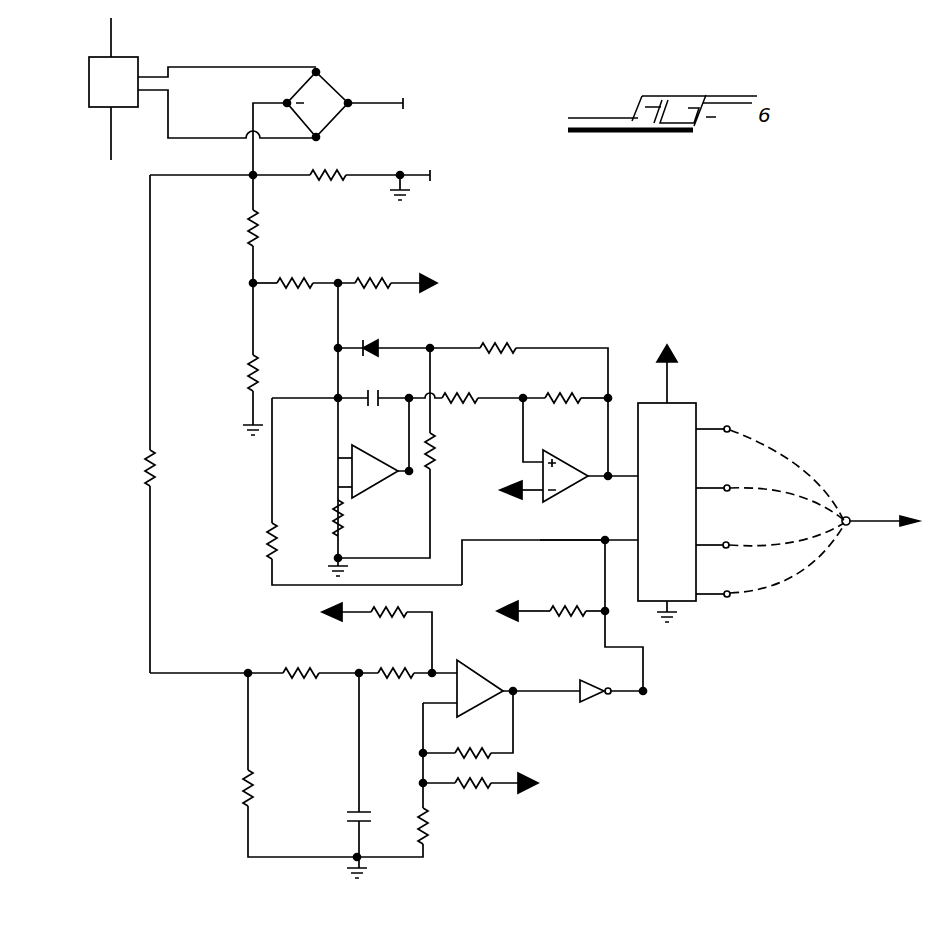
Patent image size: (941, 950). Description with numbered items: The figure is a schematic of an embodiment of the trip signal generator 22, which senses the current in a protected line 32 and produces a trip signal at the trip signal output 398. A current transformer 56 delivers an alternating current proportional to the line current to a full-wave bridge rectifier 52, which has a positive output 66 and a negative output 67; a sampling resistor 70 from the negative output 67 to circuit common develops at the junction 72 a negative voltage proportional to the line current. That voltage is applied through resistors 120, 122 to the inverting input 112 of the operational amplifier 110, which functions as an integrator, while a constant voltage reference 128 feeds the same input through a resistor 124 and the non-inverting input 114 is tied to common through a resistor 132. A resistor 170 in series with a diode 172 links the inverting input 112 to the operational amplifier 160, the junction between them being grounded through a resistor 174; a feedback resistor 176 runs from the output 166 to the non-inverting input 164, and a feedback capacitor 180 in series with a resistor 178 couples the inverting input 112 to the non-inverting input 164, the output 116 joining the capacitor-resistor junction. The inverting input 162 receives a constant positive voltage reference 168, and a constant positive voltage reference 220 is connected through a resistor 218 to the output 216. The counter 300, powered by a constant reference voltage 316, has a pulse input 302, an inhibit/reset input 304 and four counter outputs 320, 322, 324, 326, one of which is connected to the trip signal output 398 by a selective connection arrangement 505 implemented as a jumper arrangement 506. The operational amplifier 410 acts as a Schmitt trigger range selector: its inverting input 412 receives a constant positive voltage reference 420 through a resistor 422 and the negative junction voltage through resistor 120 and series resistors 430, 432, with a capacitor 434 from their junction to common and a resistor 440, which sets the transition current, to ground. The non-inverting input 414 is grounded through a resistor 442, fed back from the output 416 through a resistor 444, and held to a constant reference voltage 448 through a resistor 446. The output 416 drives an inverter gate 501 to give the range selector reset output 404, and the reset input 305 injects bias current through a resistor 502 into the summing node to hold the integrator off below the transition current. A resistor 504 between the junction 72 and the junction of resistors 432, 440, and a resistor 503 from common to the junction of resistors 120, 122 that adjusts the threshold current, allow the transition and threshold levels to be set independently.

The trip signal generator 22 is at (259, 874).
The line 32 is at (114, 44).
The full-wave bridge rectifier 52 is at (330, 90).
The current transformer 56 is at (86, 76).
The positive output 66 is at (369, 103).
The negative output 67 is at (254, 104).
The sampling resistor 70 is at (347, 174).
The junction 72 is at (250, 180).
The operational amplifier 110 is at (378, 482).
The inverting input 112 is at (336, 462).
The non-inverting input 114 is at (337, 489).
The output 116 is at (399, 466).
The resistor 120 is at (258, 240).
The resistor 122 is at (312, 276).
The resistor 124 is at (374, 278).
The constant voltage reference 128 is at (434, 284).
The resistor 132 is at (338, 526).
The operational amplifier 160 is at (560, 492).
The inverting input 162 is at (534, 492).
The non-inverting input 164 is at (522, 433).
The output 166 is at (590, 469).
The constant positive voltage reference 168 is at (498, 495).
The resistor 170 is at (489, 345).
The diode 172 is at (380, 346).
The resistor 174 is at (432, 450).
The feedback resistor 176 is at (554, 394).
The resistor 178 is at (472, 394).
The feedback capacitor 180 is at (376, 398).
The output 216 is at (578, 538).
The resistor 218 is at (580, 616).
The constant positive voltage reference 220 is at (519, 616).
The counter 300 is at (651, 476).
The pulse input 302 is at (604, 538).
The inhibit/reset input 304 is at (627, 549).
The reset input 305 is at (478, 539).
The constant reference voltage 316 is at (678, 353).
The counter output 320 is at (730, 600).
The counter output 322 is at (728, 543).
The counter output 324 is at (726, 484).
The counter output 326 is at (729, 423).
The trip signal output 398 is at (886, 517).
The range selector reset output 404 is at (644, 690).
The operational amplifier 410 is at (488, 688).
The inverting input 412 is at (447, 672).
The non-inverting input 414 is at (424, 708).
The output 416 is at (512, 692).
The constant positive voltage reference 420 is at (320, 612).
The resistor 422 is at (406, 616).
The resistor 430 is at (383, 676).
The resistor 432 is at (314, 678).
The capacitor 434 is at (352, 815).
The resistor 440 is at (254, 810).
The resistor 442 is at (426, 847).
The resistor 444 is at (462, 752).
The resistor 446 is at (488, 786).
The constant reference voltage 448 is at (540, 782).
The inverter gate 501 is at (588, 696).
The resistor 502 is at (270, 530).
The resistor 503 is at (249, 384).
The resistor 504 is at (146, 481).
The selective connection arrangement 505 is at (812, 570).
The jumper arrangement 506 is at (818, 480).